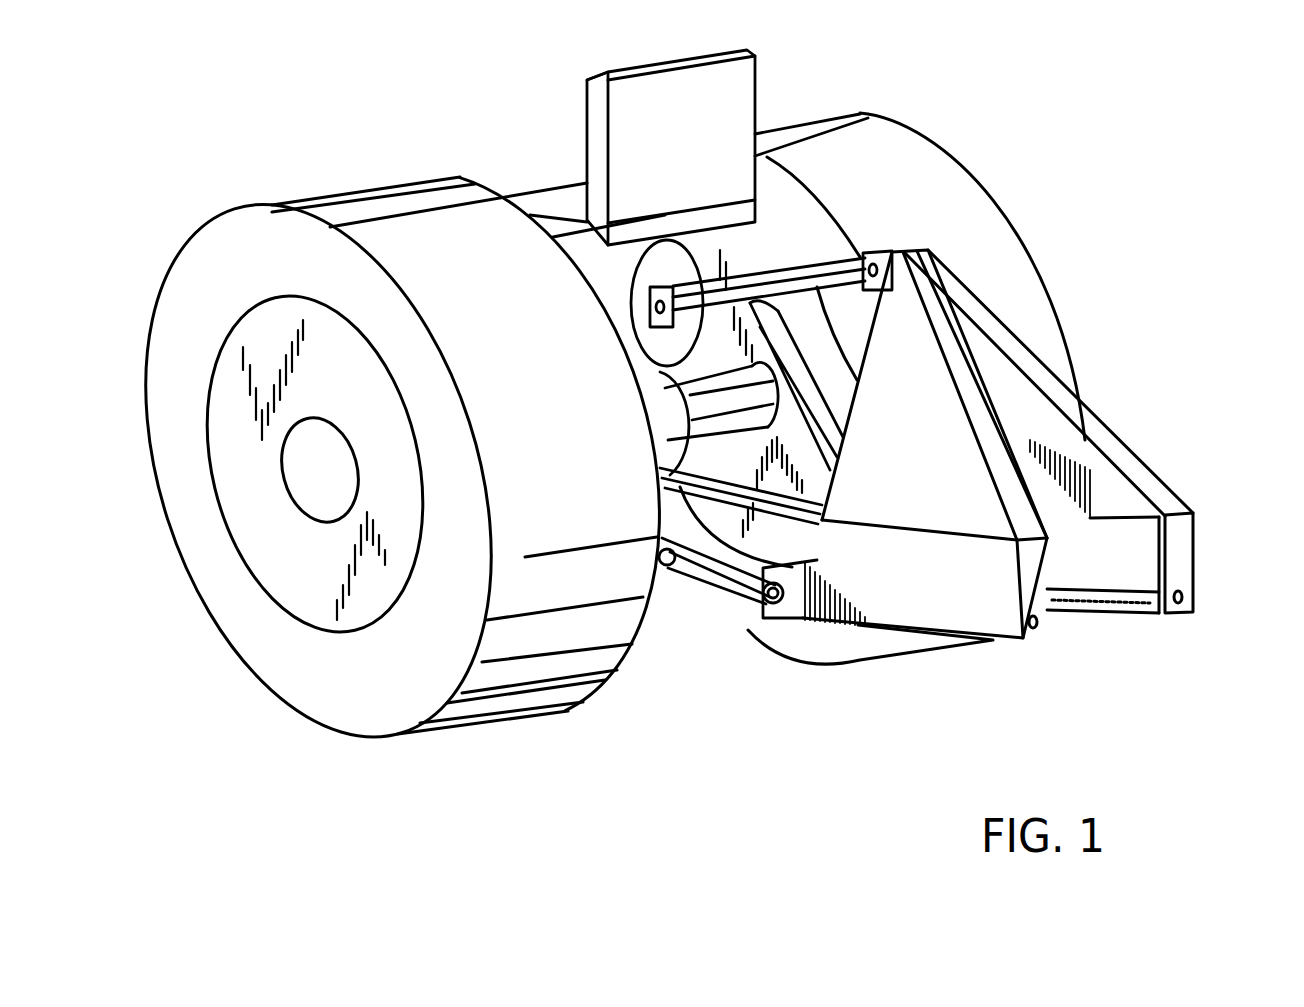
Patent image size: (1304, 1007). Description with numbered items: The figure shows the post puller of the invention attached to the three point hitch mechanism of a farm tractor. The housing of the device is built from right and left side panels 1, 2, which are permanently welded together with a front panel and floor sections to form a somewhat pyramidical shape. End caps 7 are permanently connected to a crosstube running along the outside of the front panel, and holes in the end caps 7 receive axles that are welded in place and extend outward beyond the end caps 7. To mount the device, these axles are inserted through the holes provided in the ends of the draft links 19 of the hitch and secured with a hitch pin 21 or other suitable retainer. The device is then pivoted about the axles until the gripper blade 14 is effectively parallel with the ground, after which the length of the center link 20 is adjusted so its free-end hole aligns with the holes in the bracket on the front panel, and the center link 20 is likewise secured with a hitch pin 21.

The right side panel 1 is at (1180, 577).
The left side panel 2 is at (928, 608).
The end cap 7 is at (795, 608).
The gripper blade 14 is at (1127, 613).
The draft link 19 is at (737, 585).
The center link 20 is at (802, 277).
The hitch pin 21 is at (882, 256).